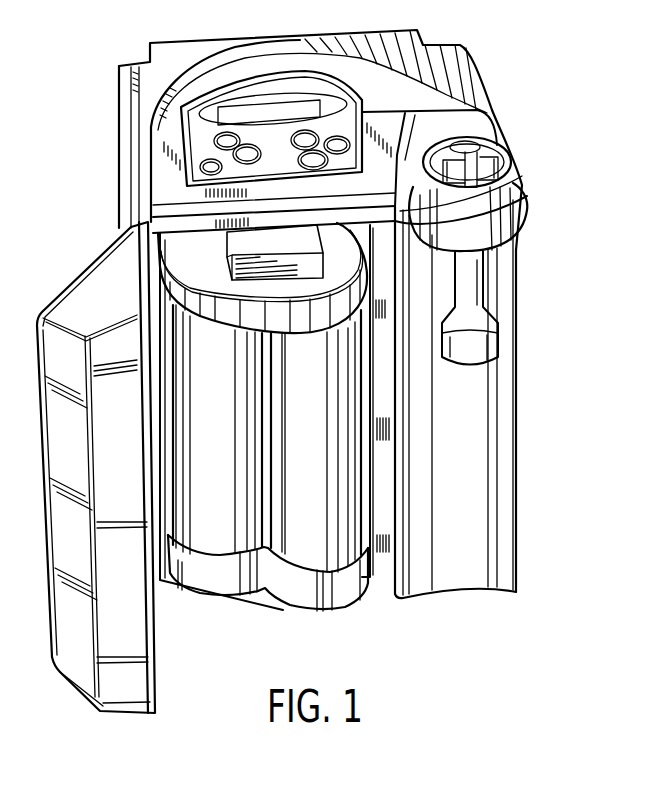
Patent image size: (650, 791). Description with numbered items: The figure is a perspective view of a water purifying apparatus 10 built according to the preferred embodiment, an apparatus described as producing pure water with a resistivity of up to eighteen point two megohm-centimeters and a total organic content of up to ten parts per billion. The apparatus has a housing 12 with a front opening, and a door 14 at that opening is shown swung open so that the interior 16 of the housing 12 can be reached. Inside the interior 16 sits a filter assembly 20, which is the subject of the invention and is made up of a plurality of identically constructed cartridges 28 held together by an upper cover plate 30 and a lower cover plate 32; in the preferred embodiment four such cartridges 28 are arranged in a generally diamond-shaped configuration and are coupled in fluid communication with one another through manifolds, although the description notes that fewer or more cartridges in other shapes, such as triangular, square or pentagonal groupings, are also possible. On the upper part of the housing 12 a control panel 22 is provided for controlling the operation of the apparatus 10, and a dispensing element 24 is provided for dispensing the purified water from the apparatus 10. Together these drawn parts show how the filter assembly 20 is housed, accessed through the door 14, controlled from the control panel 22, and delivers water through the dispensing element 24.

The water purifying apparatus 10 is at (507, 38).
The housing 12 is at (495, 112).
The door 14 is at (90, 262).
The interior 16 is at (382, 502).
The filter assembly 20 is at (333, 417).
The control panel 22 is at (278, 97).
The dispensing element 24 is at (500, 328).
The cartridges 28 is at (229, 495).
The upper cover plate 30 is at (523, 200).
The lower cover plate 32 is at (337, 592).